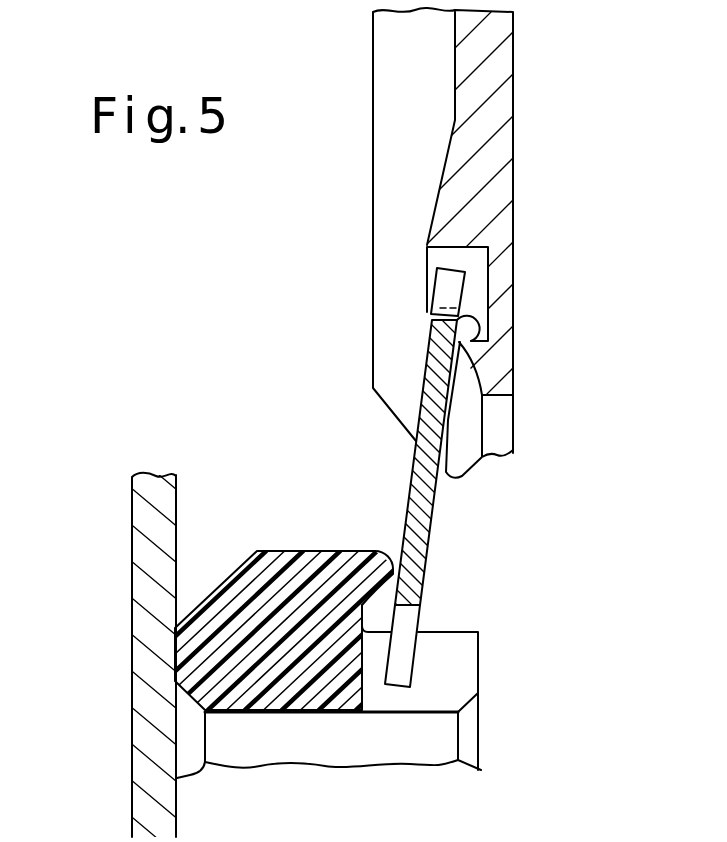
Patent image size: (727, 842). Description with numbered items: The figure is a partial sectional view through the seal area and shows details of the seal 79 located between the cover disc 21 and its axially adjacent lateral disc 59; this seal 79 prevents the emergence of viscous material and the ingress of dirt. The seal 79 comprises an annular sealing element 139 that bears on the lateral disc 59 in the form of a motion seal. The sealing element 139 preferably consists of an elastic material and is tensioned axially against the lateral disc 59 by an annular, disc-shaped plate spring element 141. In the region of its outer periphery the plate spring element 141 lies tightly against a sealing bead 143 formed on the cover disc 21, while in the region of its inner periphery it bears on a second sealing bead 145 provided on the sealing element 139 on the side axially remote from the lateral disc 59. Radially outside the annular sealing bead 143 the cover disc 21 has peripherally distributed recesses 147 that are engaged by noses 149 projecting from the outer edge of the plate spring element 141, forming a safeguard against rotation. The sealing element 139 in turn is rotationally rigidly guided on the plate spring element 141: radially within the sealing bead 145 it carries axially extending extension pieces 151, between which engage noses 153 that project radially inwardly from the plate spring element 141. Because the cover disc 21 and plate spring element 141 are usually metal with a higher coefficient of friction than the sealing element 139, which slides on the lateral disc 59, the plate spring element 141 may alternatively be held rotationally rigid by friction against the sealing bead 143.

The cover disc 21 is at (498, 57).
The lateral disc 59 is at (142, 688).
The seal 79 is at (266, 371).
The annular sealing element 139 is at (257, 630).
The plate spring element 141 is at (432, 496).
The sealing bead 143 is at (464, 345).
The sealing bead 145 is at (373, 570).
The recesses 147 is at (474, 262).
The noses 149 is at (443, 280).
The extension pieces 151 is at (452, 677).
The noses 153 is at (408, 653).